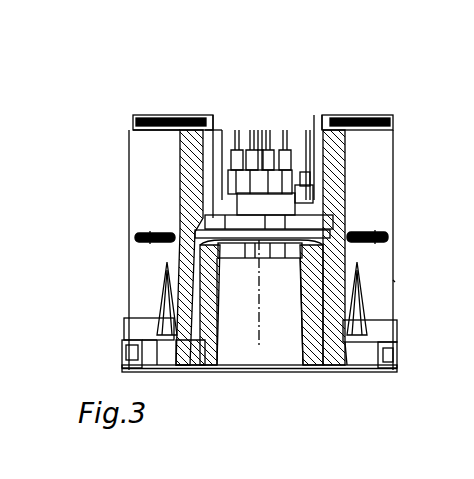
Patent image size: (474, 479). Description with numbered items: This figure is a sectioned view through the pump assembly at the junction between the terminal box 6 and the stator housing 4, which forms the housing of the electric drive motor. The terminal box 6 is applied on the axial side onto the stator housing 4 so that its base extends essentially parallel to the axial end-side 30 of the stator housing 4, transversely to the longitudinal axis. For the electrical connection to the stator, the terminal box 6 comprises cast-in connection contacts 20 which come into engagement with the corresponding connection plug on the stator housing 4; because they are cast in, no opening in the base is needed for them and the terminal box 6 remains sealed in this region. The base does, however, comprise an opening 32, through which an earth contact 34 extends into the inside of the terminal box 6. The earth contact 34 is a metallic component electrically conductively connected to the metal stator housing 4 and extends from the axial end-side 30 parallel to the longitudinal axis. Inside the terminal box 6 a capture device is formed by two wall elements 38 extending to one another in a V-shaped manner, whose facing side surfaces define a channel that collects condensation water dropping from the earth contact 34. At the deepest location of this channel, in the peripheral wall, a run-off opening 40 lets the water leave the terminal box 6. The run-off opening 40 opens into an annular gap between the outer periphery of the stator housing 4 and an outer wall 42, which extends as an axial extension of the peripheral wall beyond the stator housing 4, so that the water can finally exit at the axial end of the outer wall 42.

The stator housing 4 is at (203, 285).
The terminal box 6 is at (383, 162).
The connection contacts 20 is at (262, 120).
The axial end-side 30 is at (213, 115).
The opening 32 is at (317, 207).
The earth contact 34 is at (318, 118).
The wall elements 38 is at (473, 280).
The run-off opening 40 is at (313, 210).
The outer wall 42 is at (380, 292).